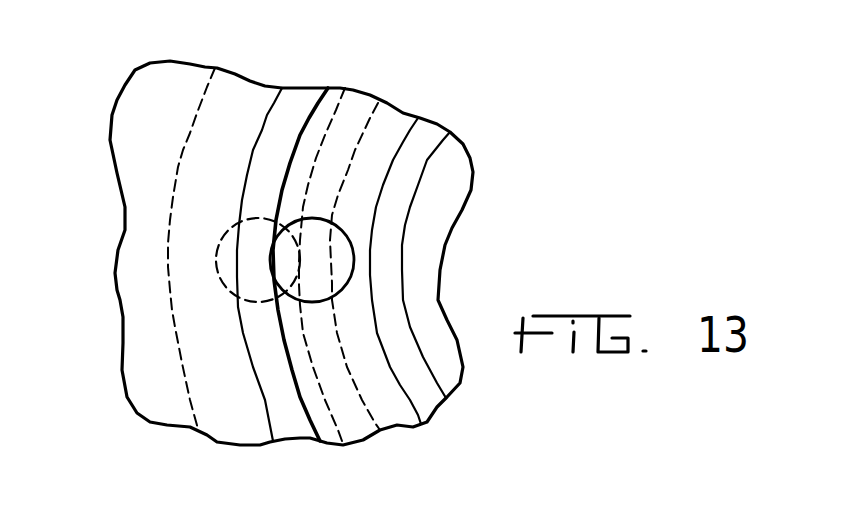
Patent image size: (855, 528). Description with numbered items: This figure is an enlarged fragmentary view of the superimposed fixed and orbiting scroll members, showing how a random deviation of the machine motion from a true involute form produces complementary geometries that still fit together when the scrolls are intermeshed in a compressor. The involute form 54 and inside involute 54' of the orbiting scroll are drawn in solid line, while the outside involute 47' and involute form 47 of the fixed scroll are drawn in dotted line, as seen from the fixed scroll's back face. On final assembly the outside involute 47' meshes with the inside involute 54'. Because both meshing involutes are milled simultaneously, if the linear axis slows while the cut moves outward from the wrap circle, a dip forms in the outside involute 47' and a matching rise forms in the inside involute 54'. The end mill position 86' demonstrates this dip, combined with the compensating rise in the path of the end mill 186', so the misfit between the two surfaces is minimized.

The involute form 54 is at (259, 238).
The inside involute 54' is at (304, 224).
The outside involute 47' is at (354, 236).
The involute form 47 is at (389, 248).
The end mill 186' is at (410, 248).
The end mill position 86' is at (173, 263).